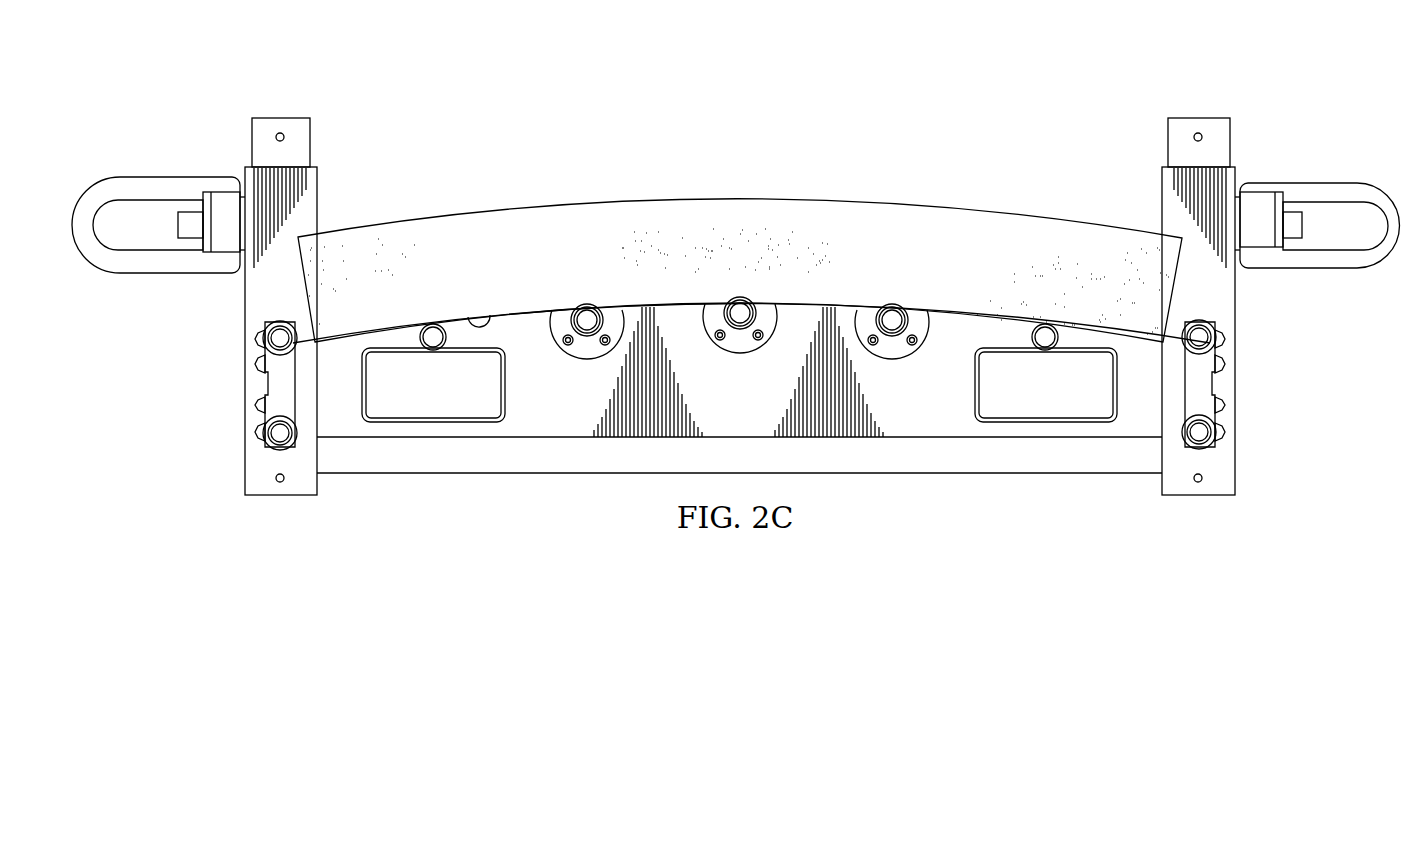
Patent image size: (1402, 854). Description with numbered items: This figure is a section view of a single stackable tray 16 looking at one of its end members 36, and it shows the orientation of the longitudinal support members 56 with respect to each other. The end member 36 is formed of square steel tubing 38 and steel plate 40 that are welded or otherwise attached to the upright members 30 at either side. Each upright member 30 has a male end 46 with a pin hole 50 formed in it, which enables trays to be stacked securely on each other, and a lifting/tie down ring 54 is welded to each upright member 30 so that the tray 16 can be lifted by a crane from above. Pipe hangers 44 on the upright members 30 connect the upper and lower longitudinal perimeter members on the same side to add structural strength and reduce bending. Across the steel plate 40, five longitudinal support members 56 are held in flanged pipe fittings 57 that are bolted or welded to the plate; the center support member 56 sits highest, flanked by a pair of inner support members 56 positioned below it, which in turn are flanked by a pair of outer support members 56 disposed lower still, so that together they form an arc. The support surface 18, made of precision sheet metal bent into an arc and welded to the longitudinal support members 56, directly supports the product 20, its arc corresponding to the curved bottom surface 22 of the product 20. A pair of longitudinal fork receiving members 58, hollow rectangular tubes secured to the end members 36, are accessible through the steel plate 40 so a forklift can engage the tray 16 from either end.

The stackable tray 16 is at (848, 94).
The support surface 18 is at (536, 311).
The product 20 is at (960, 208).
The curved bottom surface 22 is at (494, 320).
The upright member 30 is at (1237, 308).
The end member 36 is at (470, 494).
The square steel tubing 38 is at (1088, 476).
The steel plate 40 is at (943, 420).
The pipe hanger 44 is at (258, 383).
The male end 46 is at (252, 146).
The pin hole 50 is at (280, 133).
The lifting/tie down ring 54 is at (163, 177).
The longitudinal support member 56 is at (447, 335).
The flanged pipe fitting 57 is at (570, 352).
The longitudinal fork receiving member 58 is at (420, 423).